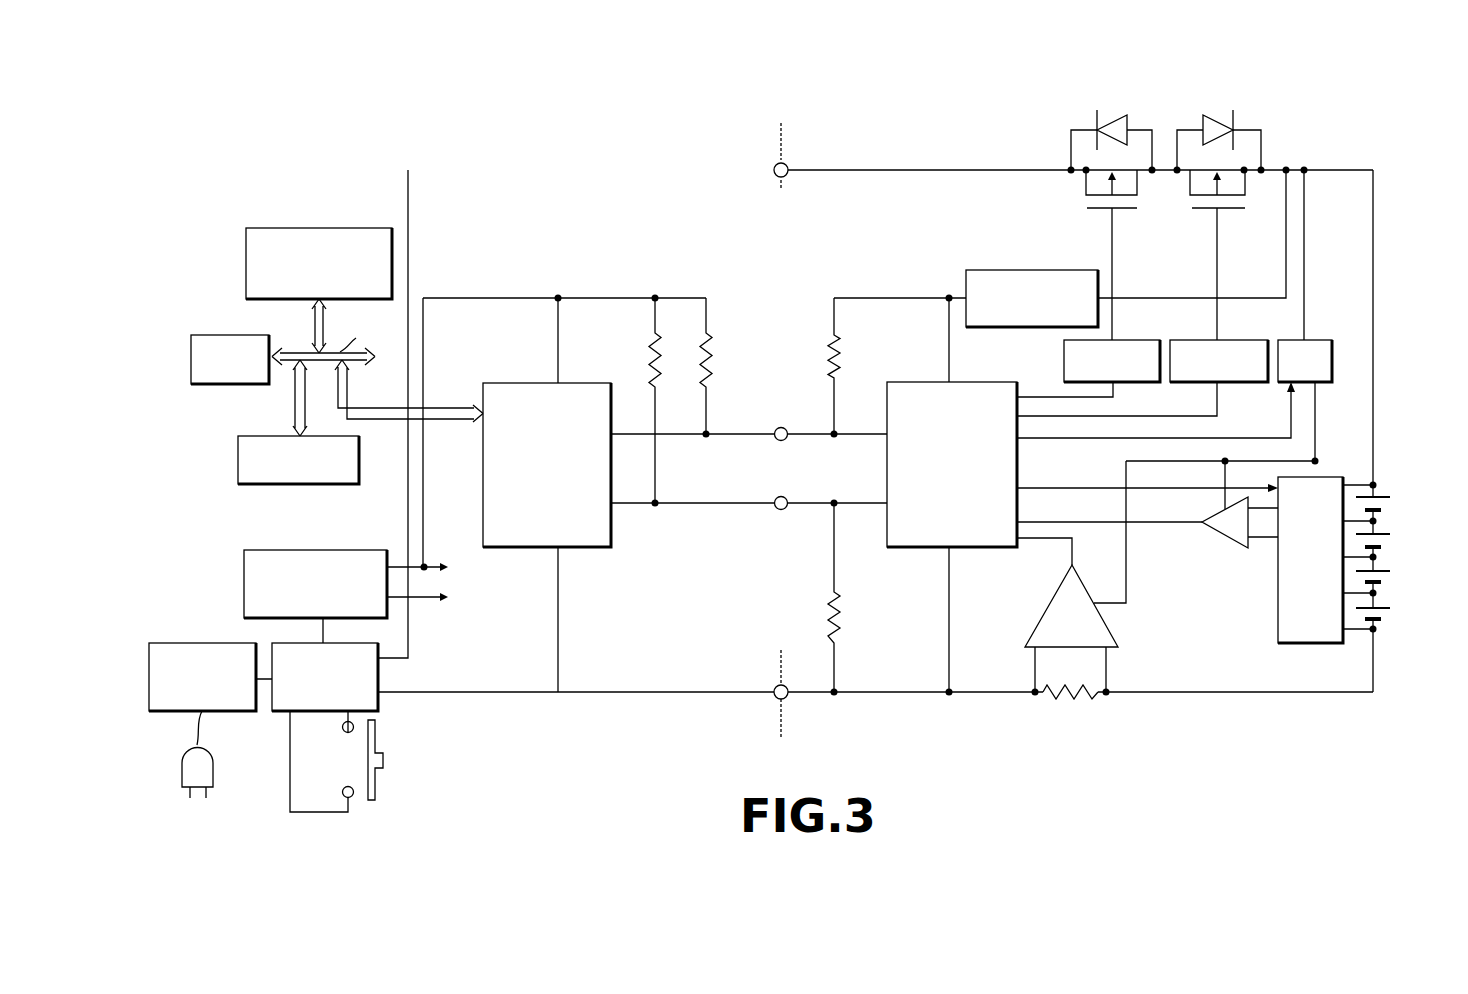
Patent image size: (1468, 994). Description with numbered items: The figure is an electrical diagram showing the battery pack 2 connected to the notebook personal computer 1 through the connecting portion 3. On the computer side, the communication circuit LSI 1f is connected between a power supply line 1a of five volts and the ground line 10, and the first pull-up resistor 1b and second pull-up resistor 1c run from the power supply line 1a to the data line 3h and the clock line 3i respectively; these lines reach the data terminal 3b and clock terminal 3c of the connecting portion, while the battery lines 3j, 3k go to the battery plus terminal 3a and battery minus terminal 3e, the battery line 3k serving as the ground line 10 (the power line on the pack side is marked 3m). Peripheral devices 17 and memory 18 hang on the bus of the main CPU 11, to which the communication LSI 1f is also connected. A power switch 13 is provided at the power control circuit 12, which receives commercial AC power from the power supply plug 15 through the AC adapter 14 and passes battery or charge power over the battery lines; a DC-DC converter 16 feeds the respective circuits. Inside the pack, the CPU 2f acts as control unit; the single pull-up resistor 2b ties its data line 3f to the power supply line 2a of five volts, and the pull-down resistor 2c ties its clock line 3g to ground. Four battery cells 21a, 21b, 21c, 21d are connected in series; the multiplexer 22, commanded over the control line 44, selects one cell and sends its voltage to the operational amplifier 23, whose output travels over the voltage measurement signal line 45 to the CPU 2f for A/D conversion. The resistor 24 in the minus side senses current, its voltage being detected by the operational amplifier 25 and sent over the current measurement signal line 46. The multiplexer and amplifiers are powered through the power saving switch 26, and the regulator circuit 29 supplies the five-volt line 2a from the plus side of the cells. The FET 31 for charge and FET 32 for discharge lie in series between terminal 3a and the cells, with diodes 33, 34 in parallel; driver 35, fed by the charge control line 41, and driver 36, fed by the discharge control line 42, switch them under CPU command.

The notebook personal computer 1 is at (560, 158).
The battery pack 2 is at (893, 158).
The connecting portion 3 is at (793, 482).
The power supply line of 5V 1a is at (455, 298).
The pull-up resistor (Rn1) 1b is at (715, 342).
The pull-up resistor (Rn2) 1c is at (648, 344).
The communication circuit LSI 1f is at (578, 548).
The power supply line of 5V 2a is at (862, 298).
The pull-up resistor (Rp11) 2b is at (848, 348).
The pull-down resistor (Rp21) 2c is at (842, 640).
The CPU (control unit) 2f is at (920, 548).
The battery plus terminal (Batt+ terminal) 3a is at (776, 166).
The data terminal 3b is at (787, 429).
The clock terminal 3c is at (777, 510).
The battery minus terminal (Batt− terminal) 3e is at (776, 688).
The data line 3f is at (853, 434).
The clock line 3g is at (853, 503).
The data line 3h is at (732, 434).
The clock line 3i is at (716, 503).
The battery line 3j is at (627, 170).
The battery line 3k is at (599, 700).
The power supply line (battery side) 3m is at (988, 170).
The ground line (GND) 10 is at (965, 723).
The CPU 11 is at (231, 385).
The power control circuit 12 is at (384, 711).
The power switch 13 is at (385, 784).
The AC adapter 14 is at (220, 711).
The power supply plug 15 is at (216, 772).
The DC-DC converter 16 is at (326, 550).
The peripheral devices 17 is at (320, 229).
The memory 18 is at (272, 485).
The battery cell 21a is at (1383, 505).
The battery cell 21b is at (1383, 541).
The battery cell 21c is at (1383, 578).
The battery cell 21d is at (1383, 614).
The multiplexer (MPX) 22 is at (1278, 626).
The operational amplifier 23 is at (1221, 542).
The resistor for current measurement 24 is at (1078, 708).
The operational amplifier 25 is at (1108, 628).
The power saving switch 26 is at (1320, 340).
The regulator circuit for 5V power supply 29 is at (1032, 279).
The FET for charge operation 31 is at (1128, 210).
The FET for discharge operation 32 is at (1237, 212).
The diode 33 is at (1118, 112).
The diode 34 is at (1213, 112).
The driver 35 is at (1126, 342).
The driver 36 is at (1234, 342).
The charge control line 41 is at (1048, 397).
The discharge control line 42 is at (1120, 416).
The control line 44 is at (1034, 488).
The voltage measurement signal line 45 is at (1034, 522).
The current measurement signal line 46 is at (1030, 540).